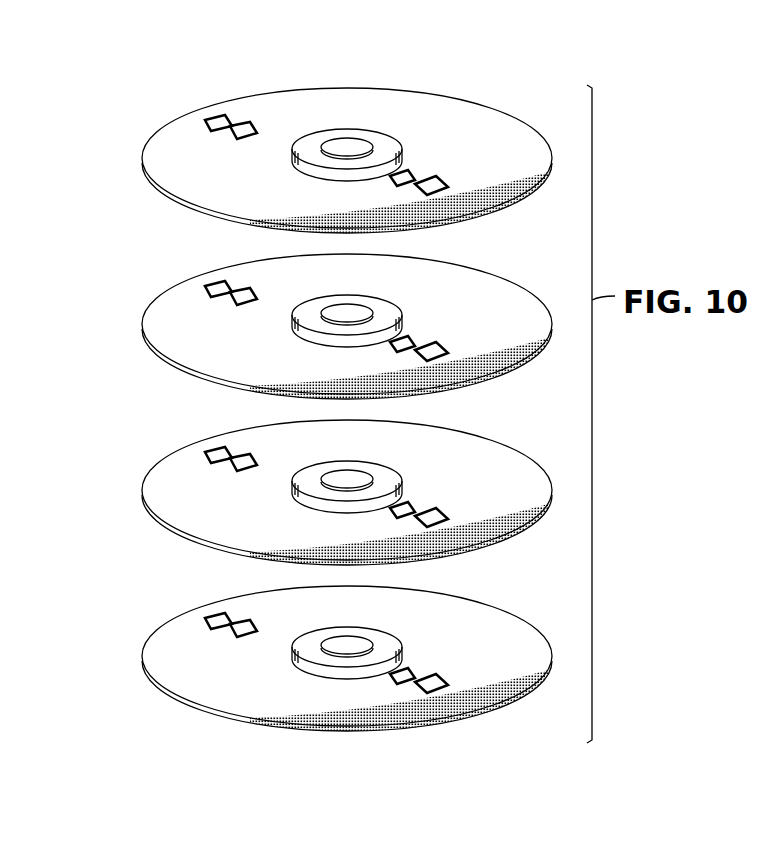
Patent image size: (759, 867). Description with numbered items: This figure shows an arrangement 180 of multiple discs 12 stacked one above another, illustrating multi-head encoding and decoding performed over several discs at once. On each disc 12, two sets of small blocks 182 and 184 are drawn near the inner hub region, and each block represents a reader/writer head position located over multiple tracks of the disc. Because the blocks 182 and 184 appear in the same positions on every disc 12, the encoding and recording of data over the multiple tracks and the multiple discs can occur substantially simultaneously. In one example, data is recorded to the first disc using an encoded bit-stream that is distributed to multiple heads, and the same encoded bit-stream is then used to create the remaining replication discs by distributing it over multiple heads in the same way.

The stacked disc assembly 180 is at (398, 80).
The disc 12 is at (347, 400).
The blocks 182 is at (217, 121).
The blocks 184 is at (407, 171).